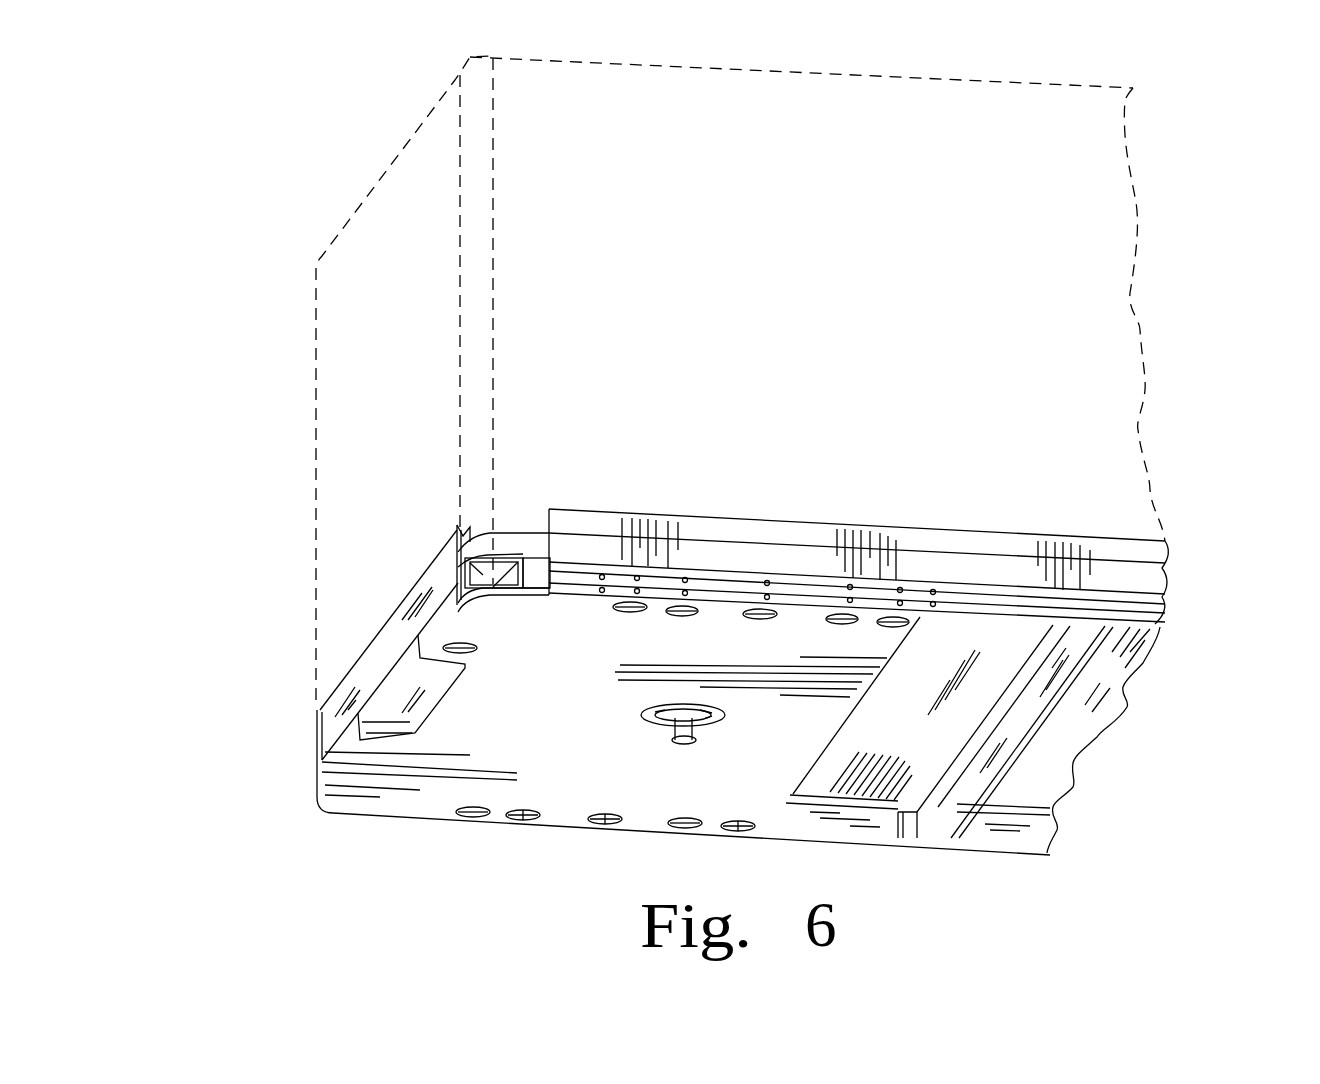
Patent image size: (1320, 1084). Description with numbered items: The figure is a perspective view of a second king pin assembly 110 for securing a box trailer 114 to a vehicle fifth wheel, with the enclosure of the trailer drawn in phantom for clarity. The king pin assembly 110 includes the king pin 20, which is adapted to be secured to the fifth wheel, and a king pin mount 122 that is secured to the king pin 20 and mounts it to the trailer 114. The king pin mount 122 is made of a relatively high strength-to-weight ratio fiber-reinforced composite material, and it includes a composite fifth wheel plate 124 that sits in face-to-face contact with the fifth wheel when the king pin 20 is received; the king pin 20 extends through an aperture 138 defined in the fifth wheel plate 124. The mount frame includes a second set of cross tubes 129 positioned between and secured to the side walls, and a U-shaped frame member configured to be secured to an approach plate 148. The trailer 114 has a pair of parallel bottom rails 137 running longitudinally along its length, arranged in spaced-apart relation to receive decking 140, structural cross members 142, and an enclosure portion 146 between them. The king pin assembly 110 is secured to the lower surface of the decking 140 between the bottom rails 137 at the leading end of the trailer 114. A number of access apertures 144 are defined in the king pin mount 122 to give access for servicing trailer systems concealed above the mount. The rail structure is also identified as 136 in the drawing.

The king pin assembly 110 is at (300, 150).
The box trailer 114 is at (270, 390).
The king pin mount 122 is at (218, 697).
The composite fifth wheel plate 124 is at (582, 713).
The second set of cross tubes 129 is at (462, 548).
The rear rail assembly 136 is at (912, 678).
The bottom rails 137 is at (778, 560).
The aperture 138 is at (688, 703).
The decking 140 is at (515, 548).
The structural cross members 142 is at (1037, 754).
The access apertures 144 is at (663, 607).
The enclosure portion 146 is at (1145, 390).
The approach plate 148 is at (405, 722).
The king pin 20 is at (688, 742).